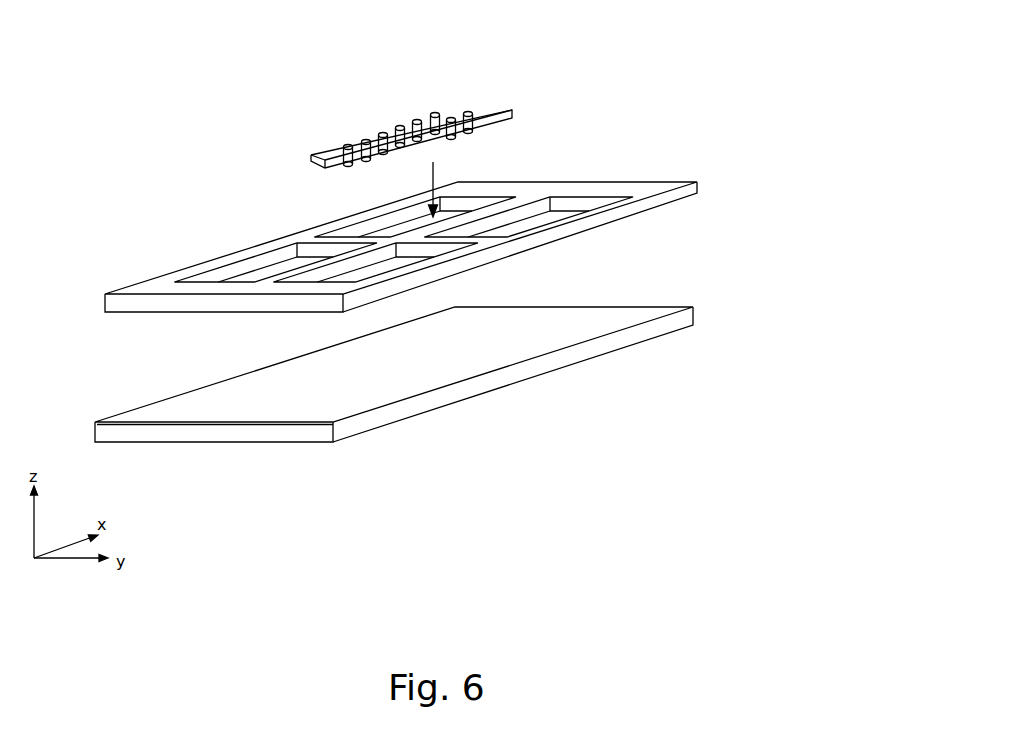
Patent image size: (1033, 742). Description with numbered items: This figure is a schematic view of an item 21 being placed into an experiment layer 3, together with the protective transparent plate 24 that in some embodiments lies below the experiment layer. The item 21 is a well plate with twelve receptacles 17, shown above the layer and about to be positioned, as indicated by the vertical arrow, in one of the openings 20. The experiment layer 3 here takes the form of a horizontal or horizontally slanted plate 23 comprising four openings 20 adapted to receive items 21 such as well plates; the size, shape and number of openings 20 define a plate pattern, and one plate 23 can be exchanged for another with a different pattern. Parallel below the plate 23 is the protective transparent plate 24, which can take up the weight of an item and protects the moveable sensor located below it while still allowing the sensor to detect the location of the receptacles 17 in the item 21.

The experiment layer 3 is at (770, 244).
The receptacles 17 is at (441, 102).
The openings 20 is at (572, 202).
The item 21 is at (348, 111).
The plate 23 is at (574, 242).
The protective transparent plate 24 is at (174, 391).